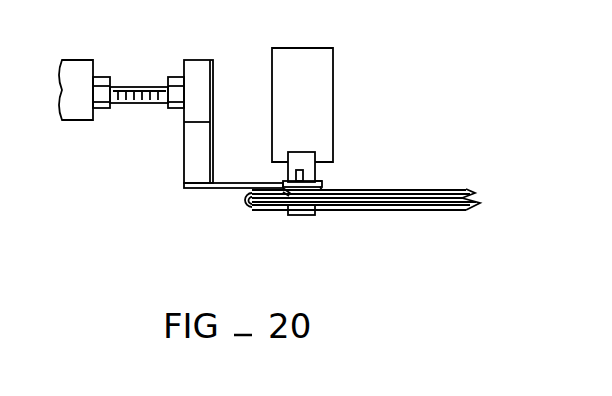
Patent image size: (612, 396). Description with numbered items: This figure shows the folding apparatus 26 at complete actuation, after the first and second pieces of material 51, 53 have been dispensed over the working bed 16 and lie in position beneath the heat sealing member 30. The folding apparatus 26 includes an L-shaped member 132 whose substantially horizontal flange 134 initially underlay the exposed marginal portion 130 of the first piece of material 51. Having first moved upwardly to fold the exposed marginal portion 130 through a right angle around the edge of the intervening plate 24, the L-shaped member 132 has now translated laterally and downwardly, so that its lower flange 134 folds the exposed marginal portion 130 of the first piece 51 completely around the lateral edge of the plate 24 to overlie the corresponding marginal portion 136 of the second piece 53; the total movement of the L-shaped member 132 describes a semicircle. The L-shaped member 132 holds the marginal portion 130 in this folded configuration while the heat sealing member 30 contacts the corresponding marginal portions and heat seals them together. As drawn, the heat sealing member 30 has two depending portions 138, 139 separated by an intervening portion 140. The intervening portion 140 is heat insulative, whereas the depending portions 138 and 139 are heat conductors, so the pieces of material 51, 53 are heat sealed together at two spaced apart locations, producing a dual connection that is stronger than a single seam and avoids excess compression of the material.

The folding apparatus 26 is at (152, 60).
The L-shaped member 132 is at (193, 162).
The horizontal flange 134 is at (205, 190).
The heat sealing member 30 is at (323, 75).
The depending portion 138 is at (289, 181).
The intervening portion 140 is at (300, 175).
The depending portion 139 is at (312, 178).
The intervening plate 24 is at (285, 195).
The marginal portion 130 is at (258, 198).
The second piece of material 53 is at (437, 190).
The first piece of material 51 is at (407, 202).
The working bed 16 is at (450, 210).
The corresponding marginal portion 136 is at (312, 198).